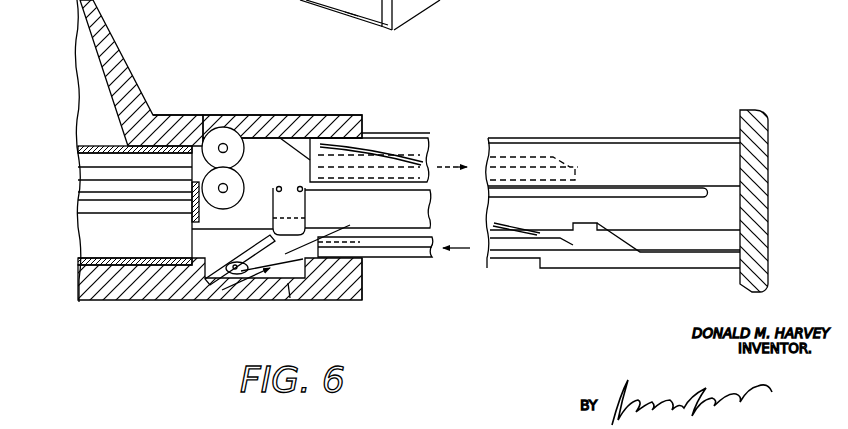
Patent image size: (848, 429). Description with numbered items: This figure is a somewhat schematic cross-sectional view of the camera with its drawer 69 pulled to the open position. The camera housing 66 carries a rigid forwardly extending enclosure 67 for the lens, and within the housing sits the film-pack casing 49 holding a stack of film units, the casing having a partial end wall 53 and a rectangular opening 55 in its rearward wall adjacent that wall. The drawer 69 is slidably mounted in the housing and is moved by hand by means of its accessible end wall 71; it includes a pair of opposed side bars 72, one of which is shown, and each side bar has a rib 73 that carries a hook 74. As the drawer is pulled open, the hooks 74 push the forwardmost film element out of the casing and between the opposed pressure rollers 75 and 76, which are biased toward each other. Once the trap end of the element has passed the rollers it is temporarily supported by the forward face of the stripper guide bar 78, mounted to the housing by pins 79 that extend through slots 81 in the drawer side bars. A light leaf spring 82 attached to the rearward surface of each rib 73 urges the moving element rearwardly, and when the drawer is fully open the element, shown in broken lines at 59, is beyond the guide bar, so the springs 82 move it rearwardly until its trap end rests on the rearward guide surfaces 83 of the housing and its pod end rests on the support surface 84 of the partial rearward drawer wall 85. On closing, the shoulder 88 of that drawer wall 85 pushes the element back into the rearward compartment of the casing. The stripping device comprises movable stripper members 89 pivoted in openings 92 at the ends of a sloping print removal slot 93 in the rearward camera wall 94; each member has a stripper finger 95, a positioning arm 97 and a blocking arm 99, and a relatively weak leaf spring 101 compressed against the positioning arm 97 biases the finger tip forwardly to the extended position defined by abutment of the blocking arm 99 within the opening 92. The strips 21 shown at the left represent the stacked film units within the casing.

The film strips 21 is at (78, 207).
The film-pack casing 49 is at (95, 228).
The partial end wall 53 is at (192, 218).
The rectangular opening 55 is at (160, 258).
The film assemblage element 59 is at (353, 152).
The camera housing 66 is at (175, 113).
The forwardly extending enclosure 67 is at (129, 77).
The drawer 69 is at (627, 136).
The accessible end wall 71 is at (768, 152).
The side bar 72 is at (660, 154).
The rib 73 is at (402, 135).
The hook 74 is at (298, 148).
The pressure roller 75 is at (223, 130).
The pressure roller 76 is at (240, 198).
The stripper guide bar 78 is at (305, 213).
The pin 79 is at (284, 189).
The slot 81 is at (406, 191).
The leaf spring 82 is at (423, 160).
The rearward guide surface 83 is at (365, 258).
The support surface 84 is at (555, 258).
The partial rearward drawer wall 85 is at (647, 257).
The shoulder 88 is at (573, 223).
The stripper member 89 is at (275, 277).
The opening 92 is at (320, 318).
The print removal slot 93 is at (290, 286).
The rearward camera wall 94 is at (362, 292).
The stripper finger 95 is at (257, 252).
The positioning arm 97 is at (359, 231).
The blocking arm 99 is at (207, 282).
The leaf spring 101 is at (240, 289).